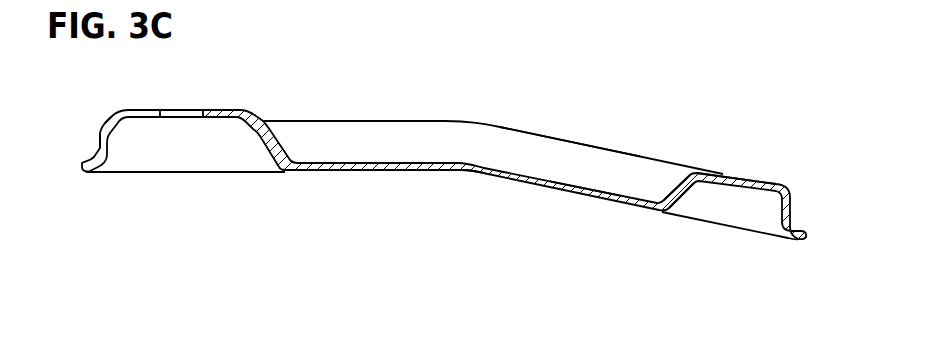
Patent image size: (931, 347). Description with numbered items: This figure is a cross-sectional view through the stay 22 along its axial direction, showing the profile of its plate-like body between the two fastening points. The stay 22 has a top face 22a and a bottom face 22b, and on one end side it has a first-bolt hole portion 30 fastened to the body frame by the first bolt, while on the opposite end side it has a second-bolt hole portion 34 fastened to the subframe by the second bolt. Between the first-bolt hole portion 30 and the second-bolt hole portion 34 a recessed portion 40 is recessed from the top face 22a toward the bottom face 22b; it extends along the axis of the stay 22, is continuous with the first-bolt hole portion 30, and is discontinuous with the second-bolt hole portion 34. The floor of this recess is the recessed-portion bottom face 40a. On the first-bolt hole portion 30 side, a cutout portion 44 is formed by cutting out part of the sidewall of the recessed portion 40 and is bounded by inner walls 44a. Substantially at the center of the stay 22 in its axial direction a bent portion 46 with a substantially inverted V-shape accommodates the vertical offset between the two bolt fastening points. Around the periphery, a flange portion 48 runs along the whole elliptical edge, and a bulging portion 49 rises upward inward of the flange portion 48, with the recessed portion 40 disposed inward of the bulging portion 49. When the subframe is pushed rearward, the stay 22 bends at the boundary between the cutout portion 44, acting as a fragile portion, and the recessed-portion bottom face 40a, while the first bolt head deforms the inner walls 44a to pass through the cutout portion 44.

The stay 22 is at (581, 85).
The top face 22a is at (353, 119).
The bottom face 22b is at (383, 172).
The first-bolt hole portion 30 is at (712, 170).
The second-bolt hole portion 34 is at (192, 110).
The recessed portion 40 is at (500, 147).
The recessed-portion bottom face 40a is at (585, 186).
The cutout portion 44 is at (682, 178).
The inner walls 44a is at (680, 197).
The bent portion 46 is at (465, 172).
The flange portion 48 is at (84, 172).
The bulging portion 49 is at (100, 140).